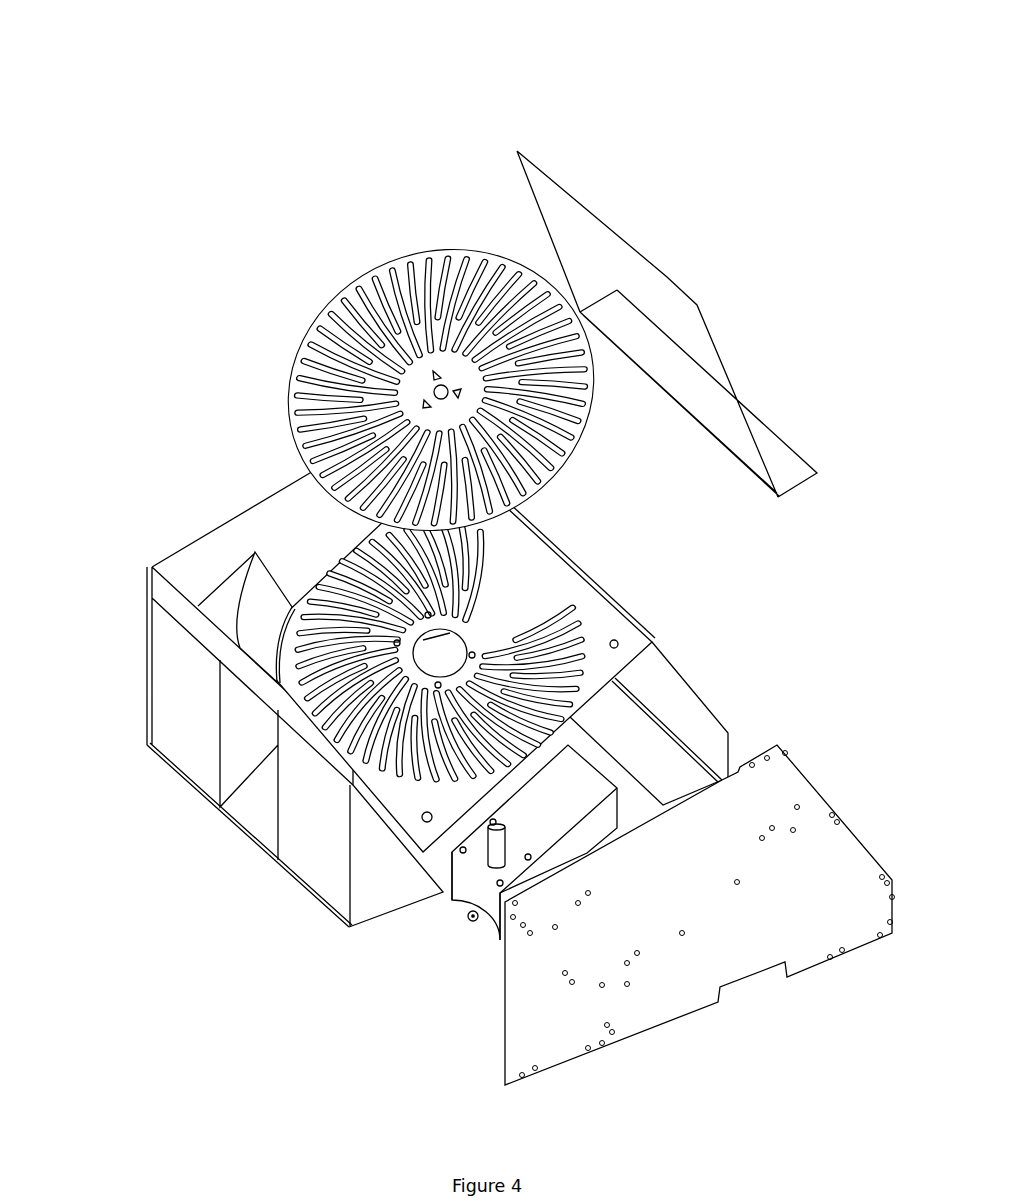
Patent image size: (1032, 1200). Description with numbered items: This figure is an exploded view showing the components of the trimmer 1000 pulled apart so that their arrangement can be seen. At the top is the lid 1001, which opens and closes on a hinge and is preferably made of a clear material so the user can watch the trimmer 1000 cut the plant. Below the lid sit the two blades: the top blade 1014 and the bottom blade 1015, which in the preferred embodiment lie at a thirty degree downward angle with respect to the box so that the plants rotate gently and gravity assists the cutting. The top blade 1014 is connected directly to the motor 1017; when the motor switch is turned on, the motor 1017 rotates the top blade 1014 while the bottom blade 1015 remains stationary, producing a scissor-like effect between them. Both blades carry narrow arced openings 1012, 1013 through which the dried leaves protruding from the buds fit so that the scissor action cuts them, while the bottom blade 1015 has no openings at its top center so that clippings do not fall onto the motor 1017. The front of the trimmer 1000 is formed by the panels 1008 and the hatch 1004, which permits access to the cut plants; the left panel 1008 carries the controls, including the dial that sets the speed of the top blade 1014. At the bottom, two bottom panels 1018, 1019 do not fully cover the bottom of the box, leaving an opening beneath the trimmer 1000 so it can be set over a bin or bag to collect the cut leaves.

The trimmer 1000 is at (227, 275).
The lid 1001 is at (567, 193).
The hatch 1004 is at (252, 812).
The panel 1008 is at (170, 701).
The arced opening 1012 is at (337, 600).
The arced opening 1013 is at (398, 277).
The top blade 1014 is at (572, 431).
The bottom blade 1015 is at (618, 644).
The motor 1017 is at (477, 894).
The bottom panel 1018 is at (392, 897).
The bottom panel 1019 is at (663, 778).